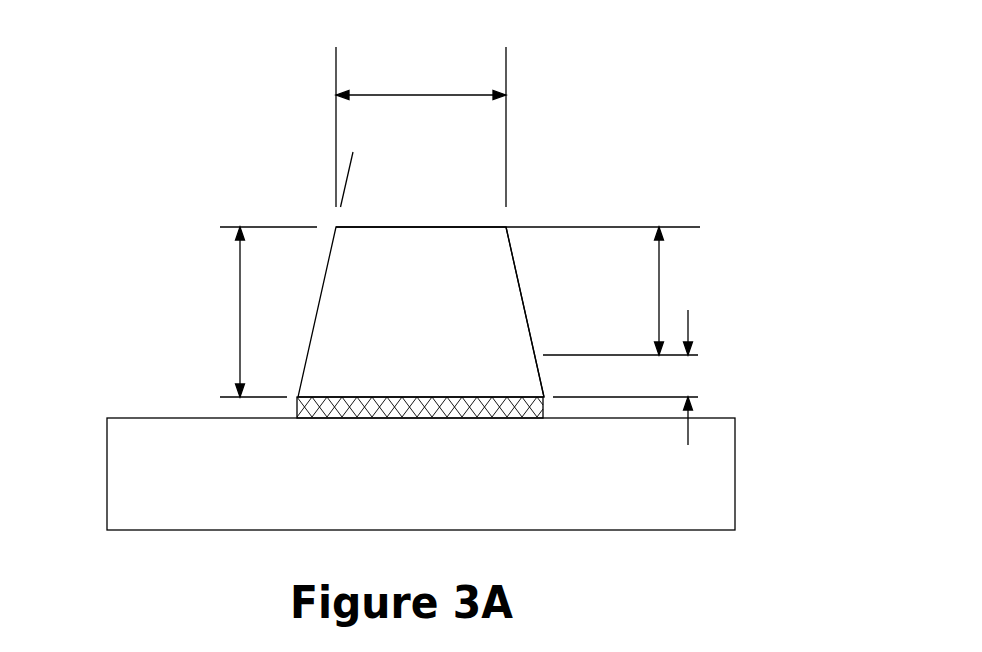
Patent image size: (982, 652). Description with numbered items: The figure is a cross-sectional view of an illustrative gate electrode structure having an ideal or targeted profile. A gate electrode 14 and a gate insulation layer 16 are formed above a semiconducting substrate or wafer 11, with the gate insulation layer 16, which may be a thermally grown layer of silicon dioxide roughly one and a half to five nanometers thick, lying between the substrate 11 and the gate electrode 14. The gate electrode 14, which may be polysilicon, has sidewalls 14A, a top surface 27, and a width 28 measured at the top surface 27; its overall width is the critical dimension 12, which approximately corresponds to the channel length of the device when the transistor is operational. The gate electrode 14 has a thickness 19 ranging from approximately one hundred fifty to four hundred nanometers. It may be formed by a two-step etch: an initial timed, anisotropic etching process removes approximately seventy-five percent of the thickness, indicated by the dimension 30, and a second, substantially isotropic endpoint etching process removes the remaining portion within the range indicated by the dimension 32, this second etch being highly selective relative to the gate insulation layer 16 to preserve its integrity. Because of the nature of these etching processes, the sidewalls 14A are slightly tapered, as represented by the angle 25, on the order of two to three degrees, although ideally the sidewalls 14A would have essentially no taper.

The semiconducting substrate 11 is at (697, 502).
The critical dimension 12 is at (192, 178).
The gate electrode 14 is at (490, 275).
The sidewalls 14A is at (523, 297).
The gate insulation layer 16 is at (523, 408).
The thickness 19 is at (238, 312).
The angle 25 is at (347, 167).
The top surface 27 is at (400, 227).
The width 28 is at (433, 95).
The dimension 30 is at (659, 282).
The dimension 32 is at (688, 318).